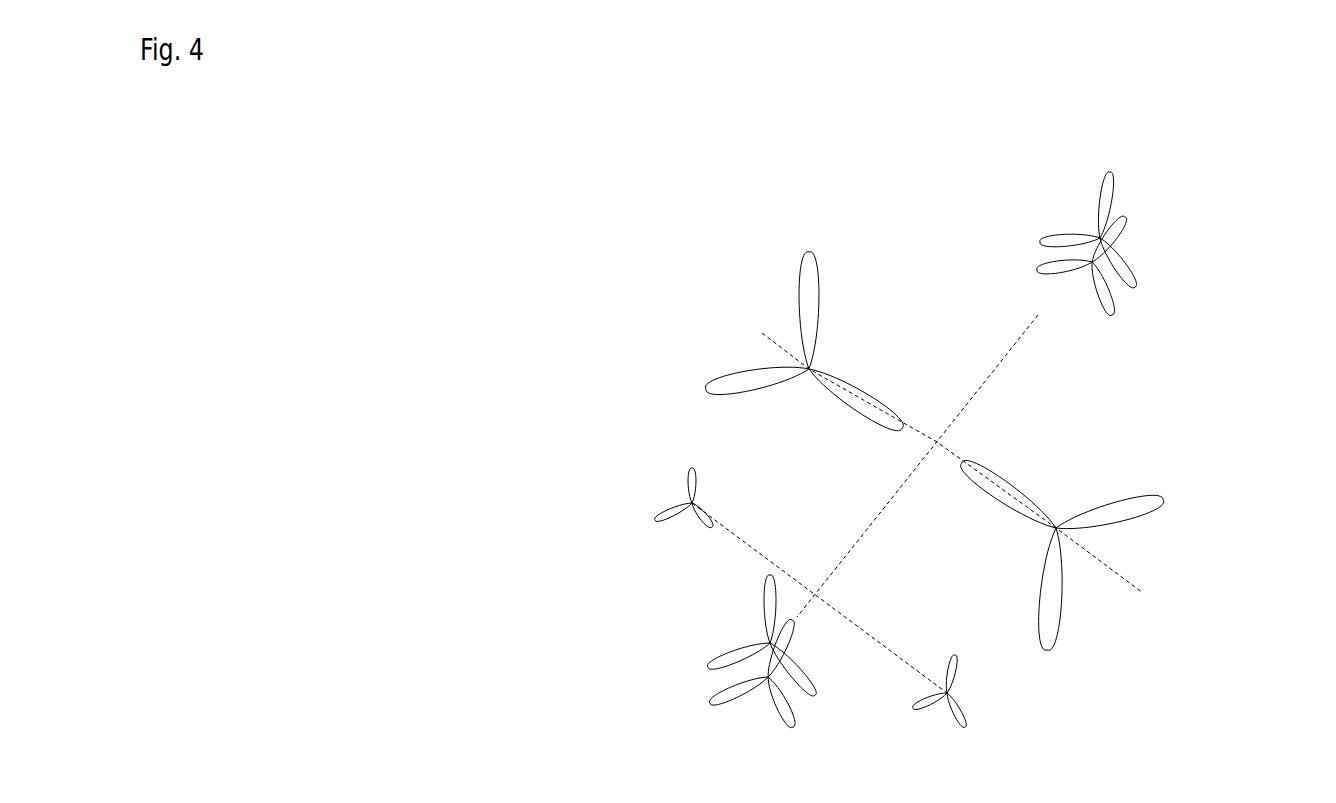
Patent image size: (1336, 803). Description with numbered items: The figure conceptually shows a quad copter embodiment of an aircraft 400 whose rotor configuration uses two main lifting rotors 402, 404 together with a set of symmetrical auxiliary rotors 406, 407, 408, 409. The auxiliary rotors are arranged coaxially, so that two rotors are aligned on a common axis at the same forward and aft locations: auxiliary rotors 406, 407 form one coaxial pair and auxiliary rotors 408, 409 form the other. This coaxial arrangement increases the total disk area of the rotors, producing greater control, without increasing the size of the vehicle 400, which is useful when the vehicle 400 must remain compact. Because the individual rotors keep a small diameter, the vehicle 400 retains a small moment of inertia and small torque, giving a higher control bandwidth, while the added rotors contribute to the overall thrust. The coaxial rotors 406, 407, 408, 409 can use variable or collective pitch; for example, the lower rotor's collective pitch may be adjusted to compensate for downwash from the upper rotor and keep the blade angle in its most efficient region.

The aircraft 400 is at (387, 240).
The main lifting rotor 402 is at (740, 383).
The main lifting rotor 404 is at (1127, 512).
The auxiliary rotor 406 is at (717, 692).
The auxiliary rotor 407 is at (738, 655).
The auxiliary rotor 408 is at (1115, 310).
The auxiliary rotor 409 is at (1105, 189).